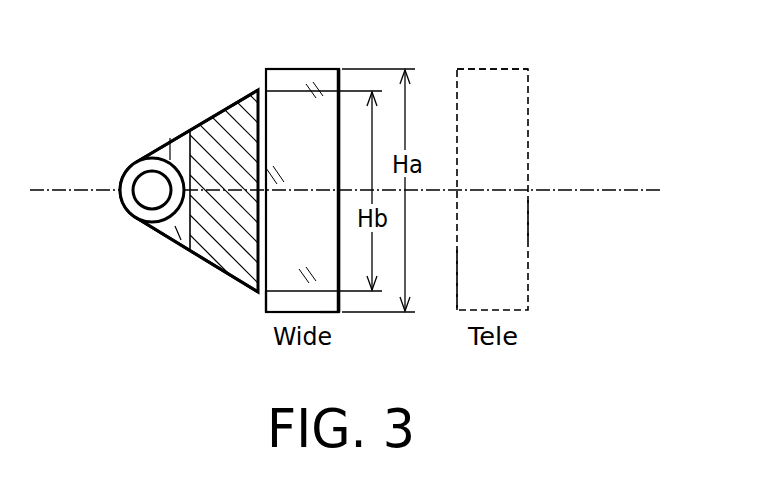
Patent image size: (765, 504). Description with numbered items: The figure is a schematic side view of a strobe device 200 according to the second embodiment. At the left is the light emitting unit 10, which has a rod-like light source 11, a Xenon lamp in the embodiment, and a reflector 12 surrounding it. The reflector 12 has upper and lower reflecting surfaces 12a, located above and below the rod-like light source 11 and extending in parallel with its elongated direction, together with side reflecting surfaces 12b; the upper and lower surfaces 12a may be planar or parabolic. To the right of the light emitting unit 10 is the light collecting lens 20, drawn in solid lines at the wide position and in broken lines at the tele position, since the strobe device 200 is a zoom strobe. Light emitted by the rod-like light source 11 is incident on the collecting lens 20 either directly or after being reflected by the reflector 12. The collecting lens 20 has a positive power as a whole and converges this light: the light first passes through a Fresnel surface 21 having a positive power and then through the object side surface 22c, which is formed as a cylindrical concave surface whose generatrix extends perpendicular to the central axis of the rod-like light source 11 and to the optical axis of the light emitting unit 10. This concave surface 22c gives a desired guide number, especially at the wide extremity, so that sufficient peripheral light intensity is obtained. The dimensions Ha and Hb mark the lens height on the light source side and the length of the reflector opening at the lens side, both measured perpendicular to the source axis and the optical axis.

The light emitting unit 10 is at (128, 100).
The rod-like light source 11 is at (143, 197).
The reflector 12 is at (220, 240).
The upper and lower reflecting surfaces 12a is at (223, 105).
The side reflecting surfaces 12b is at (185, 272).
The light collecting lens 20 is at (307, 68).
The Fresnel surface 21 is at (264, 298).
The cylindrical concave surface 22c is at (344, 311).
The strobe device 200 is at (580, 58).